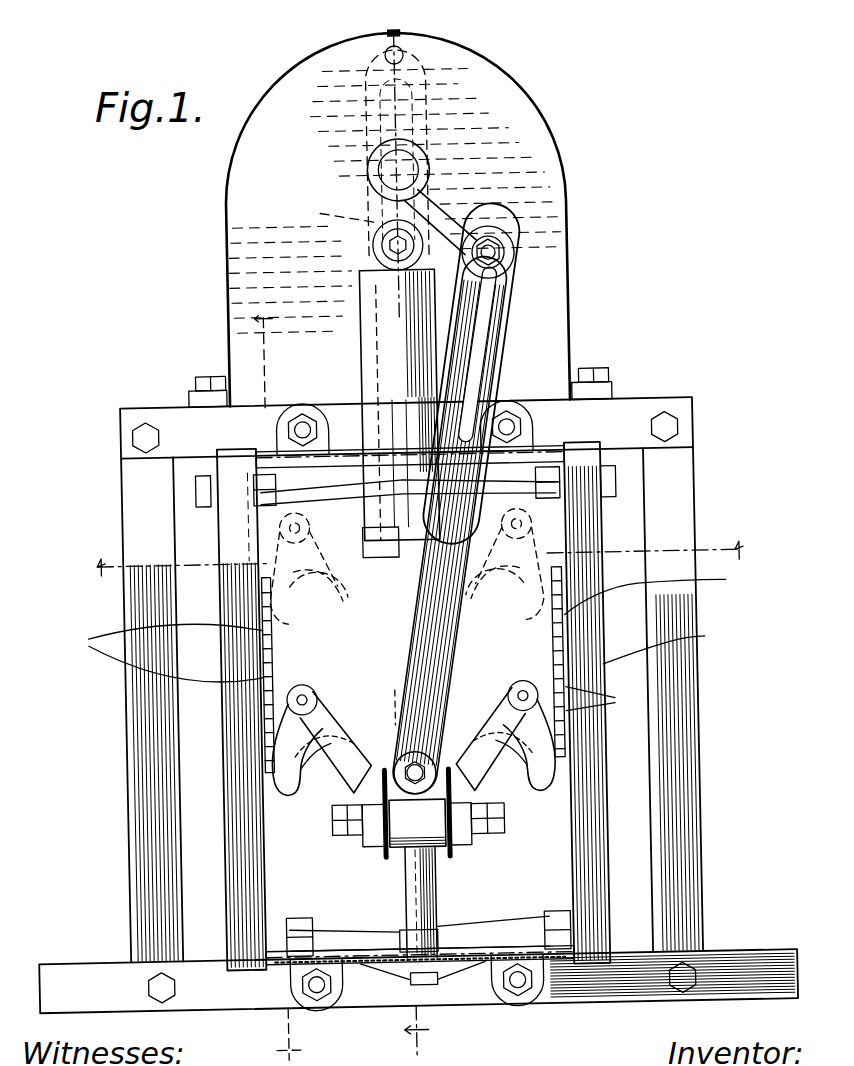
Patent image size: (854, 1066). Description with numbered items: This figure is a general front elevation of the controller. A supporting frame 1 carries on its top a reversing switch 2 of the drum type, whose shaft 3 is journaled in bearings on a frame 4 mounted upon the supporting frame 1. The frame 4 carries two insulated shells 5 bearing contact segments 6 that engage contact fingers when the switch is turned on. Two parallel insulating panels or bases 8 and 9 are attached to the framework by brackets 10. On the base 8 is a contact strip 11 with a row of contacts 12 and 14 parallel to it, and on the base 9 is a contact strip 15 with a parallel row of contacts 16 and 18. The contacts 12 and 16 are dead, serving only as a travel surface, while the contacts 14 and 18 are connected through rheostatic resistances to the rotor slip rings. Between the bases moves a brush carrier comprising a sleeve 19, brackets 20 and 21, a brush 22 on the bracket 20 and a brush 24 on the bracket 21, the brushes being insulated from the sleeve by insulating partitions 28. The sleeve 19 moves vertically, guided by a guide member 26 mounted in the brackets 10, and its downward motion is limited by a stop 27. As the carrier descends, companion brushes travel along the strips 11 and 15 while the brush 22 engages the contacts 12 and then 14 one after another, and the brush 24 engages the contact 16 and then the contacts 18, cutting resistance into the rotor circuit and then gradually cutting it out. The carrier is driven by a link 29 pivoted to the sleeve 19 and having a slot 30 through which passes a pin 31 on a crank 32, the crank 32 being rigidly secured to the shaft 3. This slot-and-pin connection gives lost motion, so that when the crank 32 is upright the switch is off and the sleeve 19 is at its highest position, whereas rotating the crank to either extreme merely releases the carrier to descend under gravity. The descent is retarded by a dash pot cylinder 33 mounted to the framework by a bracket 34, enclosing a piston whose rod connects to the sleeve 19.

The supporting frame 1 is at (182, 423).
The reversing switch 2 is at (342, 535).
The shaft 3 is at (389, 170).
The frame 4 is at (556, 193).
The insulated shells 5 is at (418, 561).
The contact segments 6 is at (264, 351).
The base 8 is at (236, 705).
The base 9 is at (665, 642).
The brackets 10 is at (540, 460).
The contact strip 11 is at (162, 654).
The contacts 12 is at (264, 608).
The contacts 14 is at (259, 715).
The contact strip 15 is at (660, 590).
The contacts 16 is at (566, 604).
The contacts 18 is at (606, 701).
The sleeve 19 is at (392, 690).
The bracket 20 is at (380, 851).
The bracket 21 is at (470, 840).
The brush 22 is at (295, 808).
The brush 24 is at (526, 803).
The guide member 26 is at (405, 513).
The stop 27 is at (418, 905).
The insulating partitions 28 is at (448, 768).
The link 29 is at (486, 378).
The slot 30 is at (490, 304).
The pin 31 is at (504, 253).
The crank 32 is at (378, 138).
The dash pot cylinder 33 is at (368, 345).
The bracket 34 is at (398, 245).